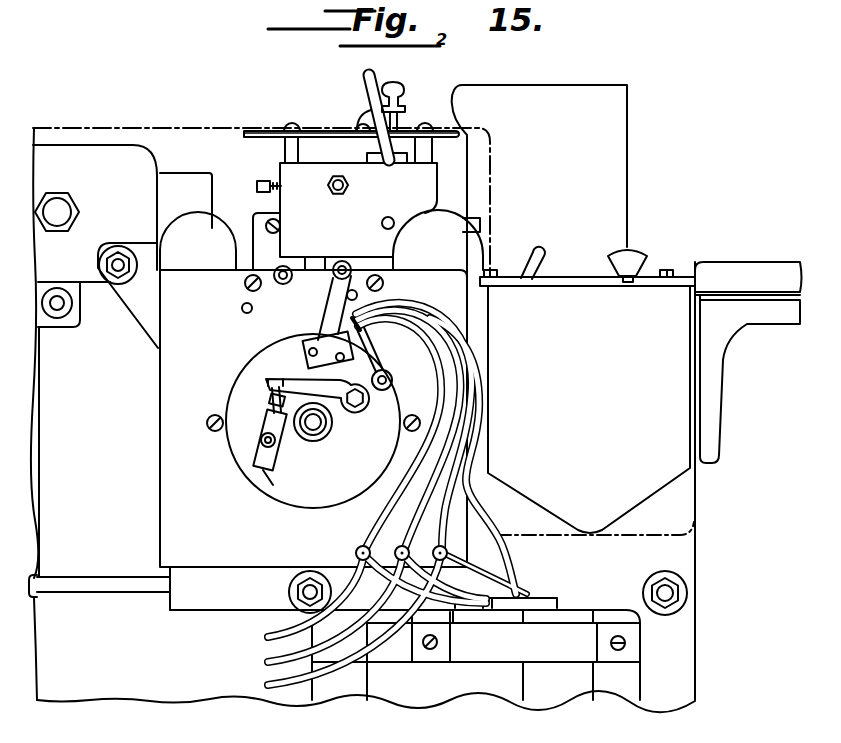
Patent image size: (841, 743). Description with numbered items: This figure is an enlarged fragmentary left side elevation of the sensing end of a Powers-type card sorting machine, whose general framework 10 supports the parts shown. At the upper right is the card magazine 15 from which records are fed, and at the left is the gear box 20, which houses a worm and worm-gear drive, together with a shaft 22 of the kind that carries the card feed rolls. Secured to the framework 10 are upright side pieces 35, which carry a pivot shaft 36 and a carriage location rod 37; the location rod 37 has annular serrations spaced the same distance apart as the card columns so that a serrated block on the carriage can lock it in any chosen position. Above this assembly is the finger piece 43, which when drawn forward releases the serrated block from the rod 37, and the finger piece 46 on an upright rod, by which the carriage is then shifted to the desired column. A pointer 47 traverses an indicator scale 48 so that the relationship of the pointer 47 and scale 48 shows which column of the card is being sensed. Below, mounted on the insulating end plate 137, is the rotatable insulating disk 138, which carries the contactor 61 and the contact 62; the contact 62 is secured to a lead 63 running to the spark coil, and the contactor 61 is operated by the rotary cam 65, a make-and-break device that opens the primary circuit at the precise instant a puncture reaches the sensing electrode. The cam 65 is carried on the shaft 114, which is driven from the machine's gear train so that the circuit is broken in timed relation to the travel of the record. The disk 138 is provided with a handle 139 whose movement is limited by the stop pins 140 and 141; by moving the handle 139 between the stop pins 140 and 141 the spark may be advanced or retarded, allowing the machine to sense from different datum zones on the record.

The framework 10 is at (680, 645).
The card magazine 15 is at (610, 122).
The gear box 20 is at (186, 200).
The shaft 22 is at (58, 210).
The upright side piece 35 is at (358, 205).
The pivot shaft 36 is at (392, 219).
The carriage location rod 37 is at (349, 185).
The finger piece 43 is at (368, 86).
The finger piece 46 is at (412, 88).
The pointer 47 is at (358, 118).
The indicator scale 48 is at (278, 108).
The contactor 61 is at (302, 382).
The contact 62 is at (270, 391).
The lead 63 is at (321, 510).
The rotary cam 65 is at (332, 423).
The shaft 114 is at (315, 432).
The end plate 137 is at (313, 418).
The disk 138 is at (241, 447).
The handle 139 is at (327, 318).
The stop pin 140 is at (358, 296).
The stop pin 141 is at (242, 306).